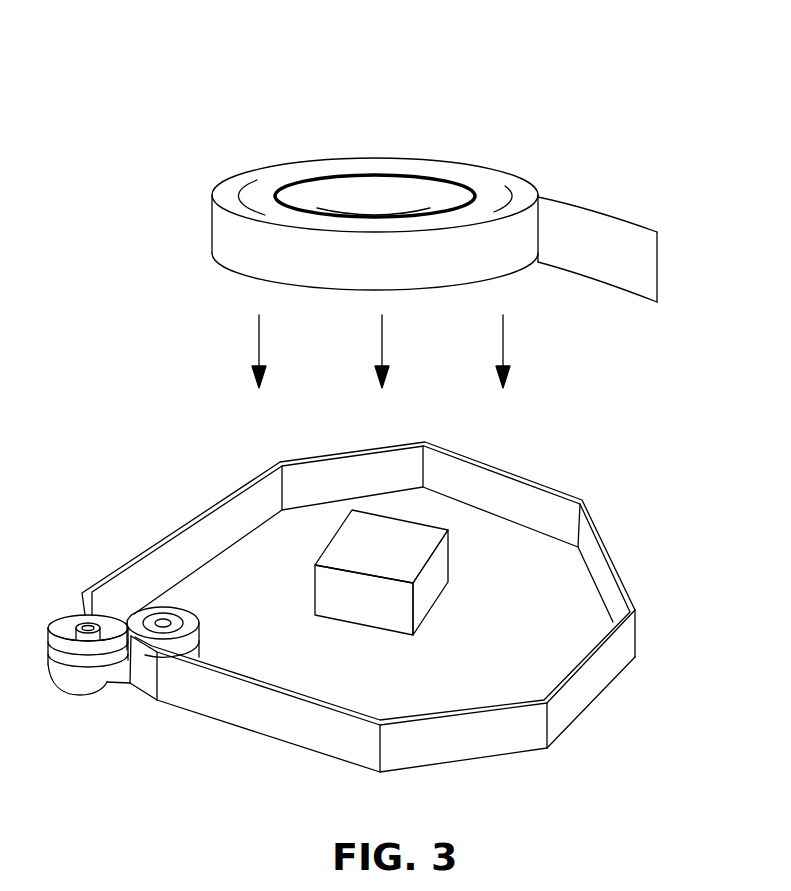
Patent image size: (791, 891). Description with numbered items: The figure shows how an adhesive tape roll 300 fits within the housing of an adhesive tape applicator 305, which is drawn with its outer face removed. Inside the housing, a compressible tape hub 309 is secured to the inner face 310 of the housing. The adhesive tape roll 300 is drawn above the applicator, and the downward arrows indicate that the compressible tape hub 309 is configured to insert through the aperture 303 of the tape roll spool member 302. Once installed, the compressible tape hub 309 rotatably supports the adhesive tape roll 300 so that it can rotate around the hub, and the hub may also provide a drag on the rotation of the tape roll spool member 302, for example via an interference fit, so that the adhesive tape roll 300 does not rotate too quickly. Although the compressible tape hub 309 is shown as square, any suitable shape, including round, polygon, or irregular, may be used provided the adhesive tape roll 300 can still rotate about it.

The adhesive tape roll 300 is at (352, 50).
The tape roll spool member 302 is at (475, 195).
The aperture 303 is at (363, 210).
The adhesive tape applicator 305 is at (199, 466).
The compressible tape hub 309 is at (415, 553).
The inner face 310 is at (565, 630).